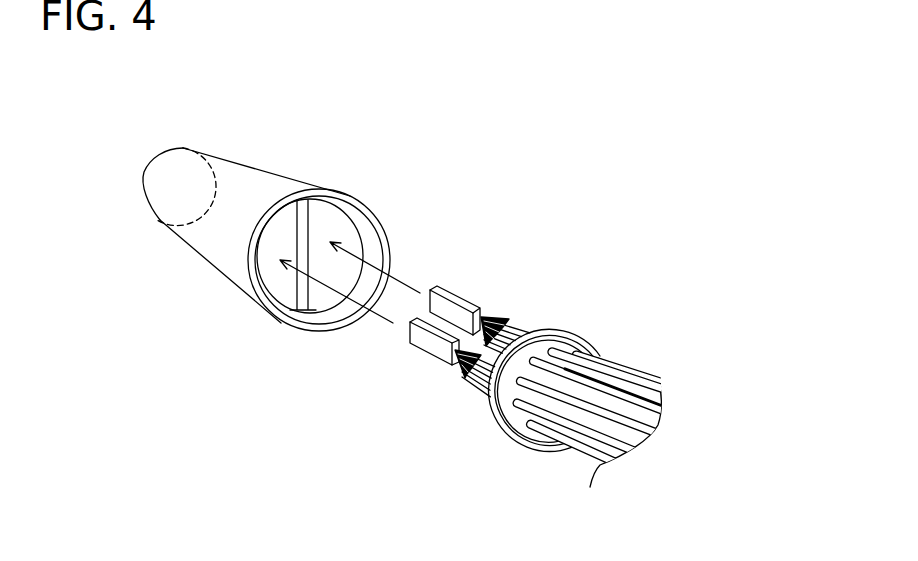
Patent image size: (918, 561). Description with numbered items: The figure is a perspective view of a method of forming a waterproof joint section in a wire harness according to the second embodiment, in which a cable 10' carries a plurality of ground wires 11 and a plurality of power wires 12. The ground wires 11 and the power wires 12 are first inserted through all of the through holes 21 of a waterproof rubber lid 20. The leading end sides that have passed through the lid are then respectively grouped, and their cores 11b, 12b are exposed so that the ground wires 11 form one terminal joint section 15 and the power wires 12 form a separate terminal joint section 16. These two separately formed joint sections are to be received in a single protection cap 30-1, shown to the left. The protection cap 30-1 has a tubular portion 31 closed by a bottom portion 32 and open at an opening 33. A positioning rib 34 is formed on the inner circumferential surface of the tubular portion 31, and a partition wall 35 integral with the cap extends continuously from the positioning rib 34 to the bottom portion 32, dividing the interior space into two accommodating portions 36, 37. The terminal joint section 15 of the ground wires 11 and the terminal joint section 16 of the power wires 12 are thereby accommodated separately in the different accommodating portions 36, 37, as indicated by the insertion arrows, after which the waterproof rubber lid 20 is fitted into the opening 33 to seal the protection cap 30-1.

The optical fiber cable 10' is at (645, 393).
The ground wires 11 is at (597, 372).
The cores 11b is at (489, 313).
The power wires 12 is at (545, 397).
The cores 12b is at (458, 377).
The terminal joint section 15 is at (452, 290).
The terminal joint section 16 is at (420, 353).
The waterproof rubber lid 20 is at (578, 328).
The through holes 21 is at (551, 347).
The protection cap 30-1 is at (293, 170).
The tubular portion 31 is at (258, 162).
The bottom portion 32 is at (158, 181).
The opening 33 is at (320, 318).
The positioning rib 34 is at (343, 230).
The partition wall 35 is at (287, 278).
The accommodating portion 36 is at (347, 245).
The accommodating portion 37 is at (262, 262).